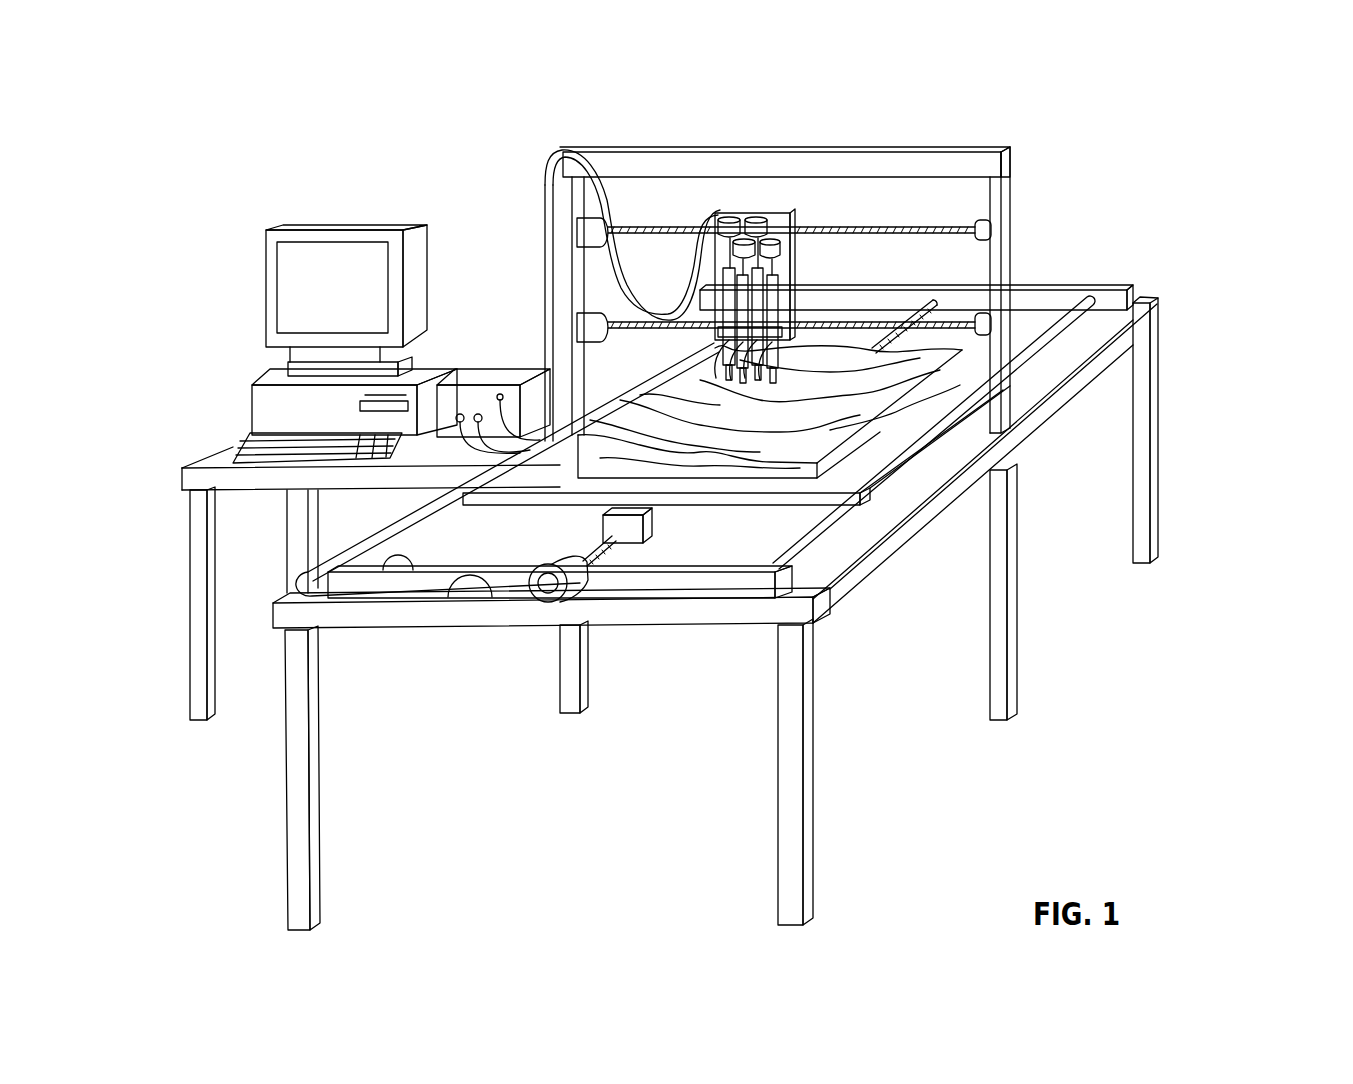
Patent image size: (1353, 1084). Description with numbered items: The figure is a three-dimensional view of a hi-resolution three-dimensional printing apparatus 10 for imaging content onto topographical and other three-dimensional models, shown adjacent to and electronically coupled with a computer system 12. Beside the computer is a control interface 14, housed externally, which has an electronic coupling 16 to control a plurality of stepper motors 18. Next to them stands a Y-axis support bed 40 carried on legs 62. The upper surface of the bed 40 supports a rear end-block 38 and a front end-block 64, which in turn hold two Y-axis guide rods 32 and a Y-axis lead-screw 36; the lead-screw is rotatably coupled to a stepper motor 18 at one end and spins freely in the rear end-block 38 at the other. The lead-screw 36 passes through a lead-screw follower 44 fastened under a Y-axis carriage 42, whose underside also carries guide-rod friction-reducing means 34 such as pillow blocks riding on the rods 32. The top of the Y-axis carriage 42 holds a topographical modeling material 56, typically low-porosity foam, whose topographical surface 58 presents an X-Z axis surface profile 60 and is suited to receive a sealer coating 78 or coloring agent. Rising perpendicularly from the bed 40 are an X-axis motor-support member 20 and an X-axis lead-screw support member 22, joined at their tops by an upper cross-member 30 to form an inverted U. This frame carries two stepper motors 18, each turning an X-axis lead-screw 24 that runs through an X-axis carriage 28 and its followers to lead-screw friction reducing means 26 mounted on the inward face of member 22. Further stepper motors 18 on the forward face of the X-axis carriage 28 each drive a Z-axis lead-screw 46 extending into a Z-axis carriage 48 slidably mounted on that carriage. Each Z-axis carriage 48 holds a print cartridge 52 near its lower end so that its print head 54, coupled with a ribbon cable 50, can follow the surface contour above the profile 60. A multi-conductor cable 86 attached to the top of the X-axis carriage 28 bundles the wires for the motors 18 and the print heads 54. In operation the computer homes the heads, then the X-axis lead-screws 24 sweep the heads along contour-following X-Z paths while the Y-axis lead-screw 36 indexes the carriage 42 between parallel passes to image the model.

The hi-resolution 3D printing apparatus 10 is at (416, 109).
The computer system 12 is at (260, 403).
The control interface 14 is at (503, 395).
The electronic coupling 16 is at (472, 377).
The stepper motors 18 is at (595, 226).
The X-axis motor-support member 20 is at (566, 235).
The X-axis lead-screw support member 22 is at (1011, 246).
The X-axis lead-screw 24 is at (722, 293).
The lead-screw friction reducing means 26 is at (963, 220).
The X-axis carriage 28 is at (776, 216).
The upper cross-member 30 is at (925, 147).
The Y-axis guide rod 32 is at (1098, 333).
The guide-rod friction-reducing means 34 is at (292, 560).
The Y-axis lead-screw 36 is at (935, 293).
The rear end-block 38 is at (1127, 290).
The Y-axis support bed 40 is at (1123, 317).
The Y-axis carriage 42 is at (940, 425).
The lead-screw follower 44 is at (650, 520).
The Z-axis lead-screw 46 is at (718, 232).
The Z-axis carriage 48 is at (727, 278).
The ribbon cable 50 is at (722, 262).
The print cartridge 52 is at (880, 302).
The print head 54 is at (907, 432).
The topographical modeling material 56 is at (700, 385).
The topographical surface 58 is at (805, 440).
The X-Z axis surface profile 60 is at (713, 318).
The legs 62 is at (192, 650).
The front end-block 64 is at (800, 590).
The sealer coating 78 is at (815, 452).
The multi-conductor cable 86 is at (552, 161).